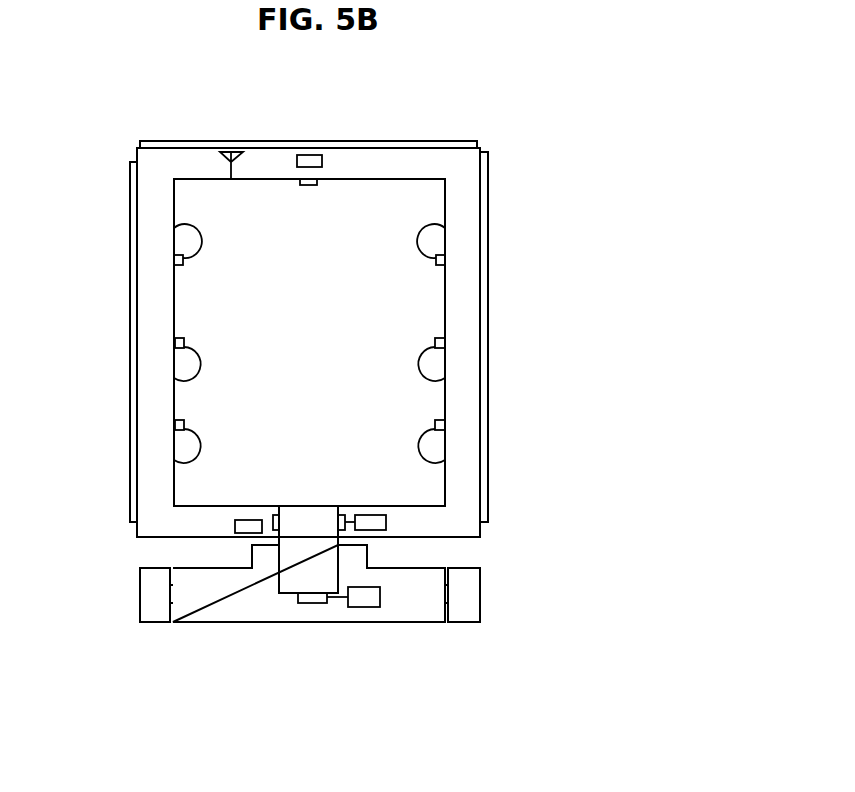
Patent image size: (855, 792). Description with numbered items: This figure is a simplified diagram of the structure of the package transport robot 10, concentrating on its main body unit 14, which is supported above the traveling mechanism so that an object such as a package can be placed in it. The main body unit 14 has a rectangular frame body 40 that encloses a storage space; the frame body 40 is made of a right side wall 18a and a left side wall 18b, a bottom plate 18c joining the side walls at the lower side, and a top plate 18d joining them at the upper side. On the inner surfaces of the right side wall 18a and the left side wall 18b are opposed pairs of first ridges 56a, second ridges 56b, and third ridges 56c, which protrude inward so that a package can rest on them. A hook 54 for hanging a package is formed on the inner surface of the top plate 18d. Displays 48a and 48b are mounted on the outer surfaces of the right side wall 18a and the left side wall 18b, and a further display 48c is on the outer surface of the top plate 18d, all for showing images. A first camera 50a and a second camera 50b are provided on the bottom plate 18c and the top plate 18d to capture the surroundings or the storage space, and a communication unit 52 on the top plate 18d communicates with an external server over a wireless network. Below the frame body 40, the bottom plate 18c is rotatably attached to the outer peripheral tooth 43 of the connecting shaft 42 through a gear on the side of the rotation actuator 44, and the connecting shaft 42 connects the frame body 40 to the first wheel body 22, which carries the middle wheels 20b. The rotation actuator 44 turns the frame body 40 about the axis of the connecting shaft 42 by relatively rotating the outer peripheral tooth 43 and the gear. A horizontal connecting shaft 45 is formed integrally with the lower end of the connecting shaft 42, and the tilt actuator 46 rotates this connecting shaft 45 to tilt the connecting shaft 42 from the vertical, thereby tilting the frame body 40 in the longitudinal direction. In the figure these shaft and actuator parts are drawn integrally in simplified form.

The package transport robot 10 is at (483, 687).
The main body unit 14 is at (428, 130).
The right side wall 18a is at (470, 210).
The left side wall 18b is at (147, 210).
The bottom plate 18c is at (201, 513).
The top plate 18d is at (193, 155).
The middle wheels 20b is at (140, 593).
The first wheel body 22 is at (197, 610).
The frame body 40 is at (468, 345).
The connecting shaft 42 is at (305, 515).
The outer peripheral tooth 43 is at (267, 512).
The rotation actuator 44 is at (373, 513).
The connecting shaft 45 is at (308, 603).
The tilt actuator 46 is at (367, 598).
The display 48a is at (488, 293).
The display 48b is at (130, 293).
The display 48c is at (470, 140).
The first camera 50a is at (310, 155).
The second camera 50b is at (247, 518).
The communication unit 52 is at (238, 168).
The hook 54 is at (312, 188).
The first ridges 56a is at (183, 223).
The second ridges 56b is at (175, 378).
The third ridges 56c is at (175, 460).